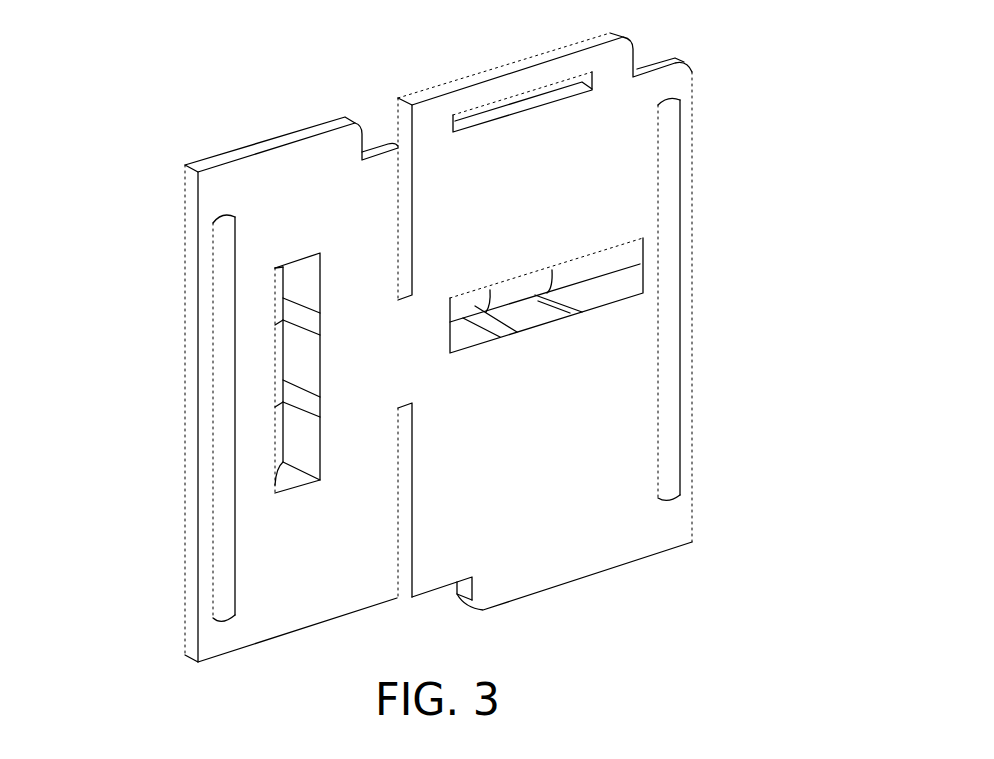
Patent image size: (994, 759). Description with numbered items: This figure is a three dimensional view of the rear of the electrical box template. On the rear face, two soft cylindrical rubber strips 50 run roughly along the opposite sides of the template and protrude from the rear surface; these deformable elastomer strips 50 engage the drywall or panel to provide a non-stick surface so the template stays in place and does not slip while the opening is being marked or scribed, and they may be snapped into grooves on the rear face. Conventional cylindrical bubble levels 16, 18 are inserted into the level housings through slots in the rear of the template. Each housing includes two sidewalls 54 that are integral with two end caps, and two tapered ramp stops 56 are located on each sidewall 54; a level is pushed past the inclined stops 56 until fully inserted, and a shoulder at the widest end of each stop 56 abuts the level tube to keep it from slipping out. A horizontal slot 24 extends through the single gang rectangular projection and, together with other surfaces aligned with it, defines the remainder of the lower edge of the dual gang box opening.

The bubble level 16 is at (280, 385).
The bubble level 18 is at (483, 308).
The horizontal slot 24 is at (523, 106).
The rubber strips 50 is at (225, 502).
The sidewalls 54 is at (295, 282).
The tapered ramp stops 56 is at (297, 400).